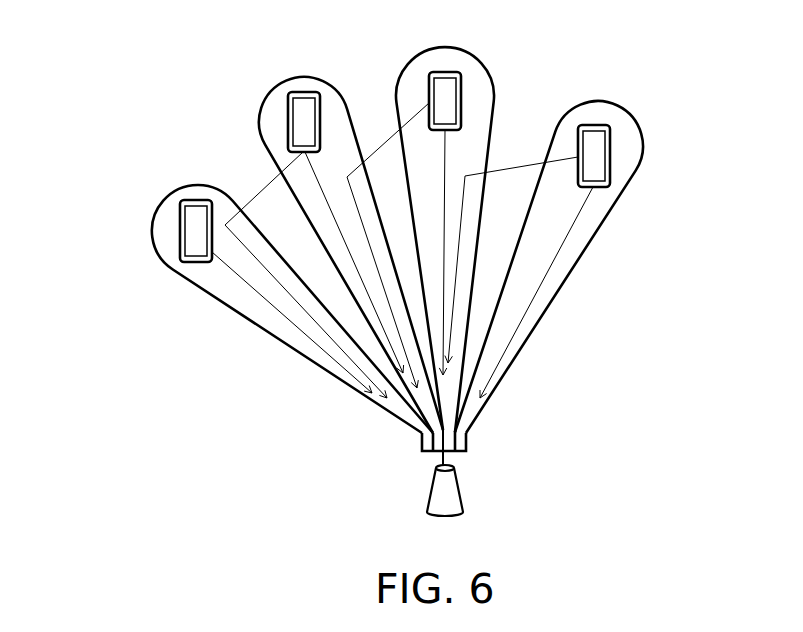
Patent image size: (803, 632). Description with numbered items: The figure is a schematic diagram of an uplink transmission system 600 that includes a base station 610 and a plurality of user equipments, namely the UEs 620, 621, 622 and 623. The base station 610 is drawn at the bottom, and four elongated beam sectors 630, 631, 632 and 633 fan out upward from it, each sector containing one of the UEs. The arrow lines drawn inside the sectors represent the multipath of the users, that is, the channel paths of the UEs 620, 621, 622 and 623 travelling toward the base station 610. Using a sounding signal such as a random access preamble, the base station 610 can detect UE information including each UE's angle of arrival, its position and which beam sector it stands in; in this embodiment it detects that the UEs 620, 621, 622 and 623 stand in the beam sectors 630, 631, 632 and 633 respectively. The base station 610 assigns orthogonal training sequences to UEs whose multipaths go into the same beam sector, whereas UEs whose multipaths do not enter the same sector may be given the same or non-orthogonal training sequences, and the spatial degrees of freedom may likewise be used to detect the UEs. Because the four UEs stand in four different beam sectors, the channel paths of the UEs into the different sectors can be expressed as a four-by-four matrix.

The uplink transmission system 600 is at (652, 518).
The base station 610 is at (451, 492).
The UE 620 is at (194, 199).
The UE 621 is at (303, 90).
The UE 622 is at (462, 88).
The UE 623 is at (610, 143).
The beam sector 630 is at (170, 235).
The beam sector 631 is at (274, 121).
The beam sector 632 is at (432, 60).
The beam sector 633 is at (592, 113).